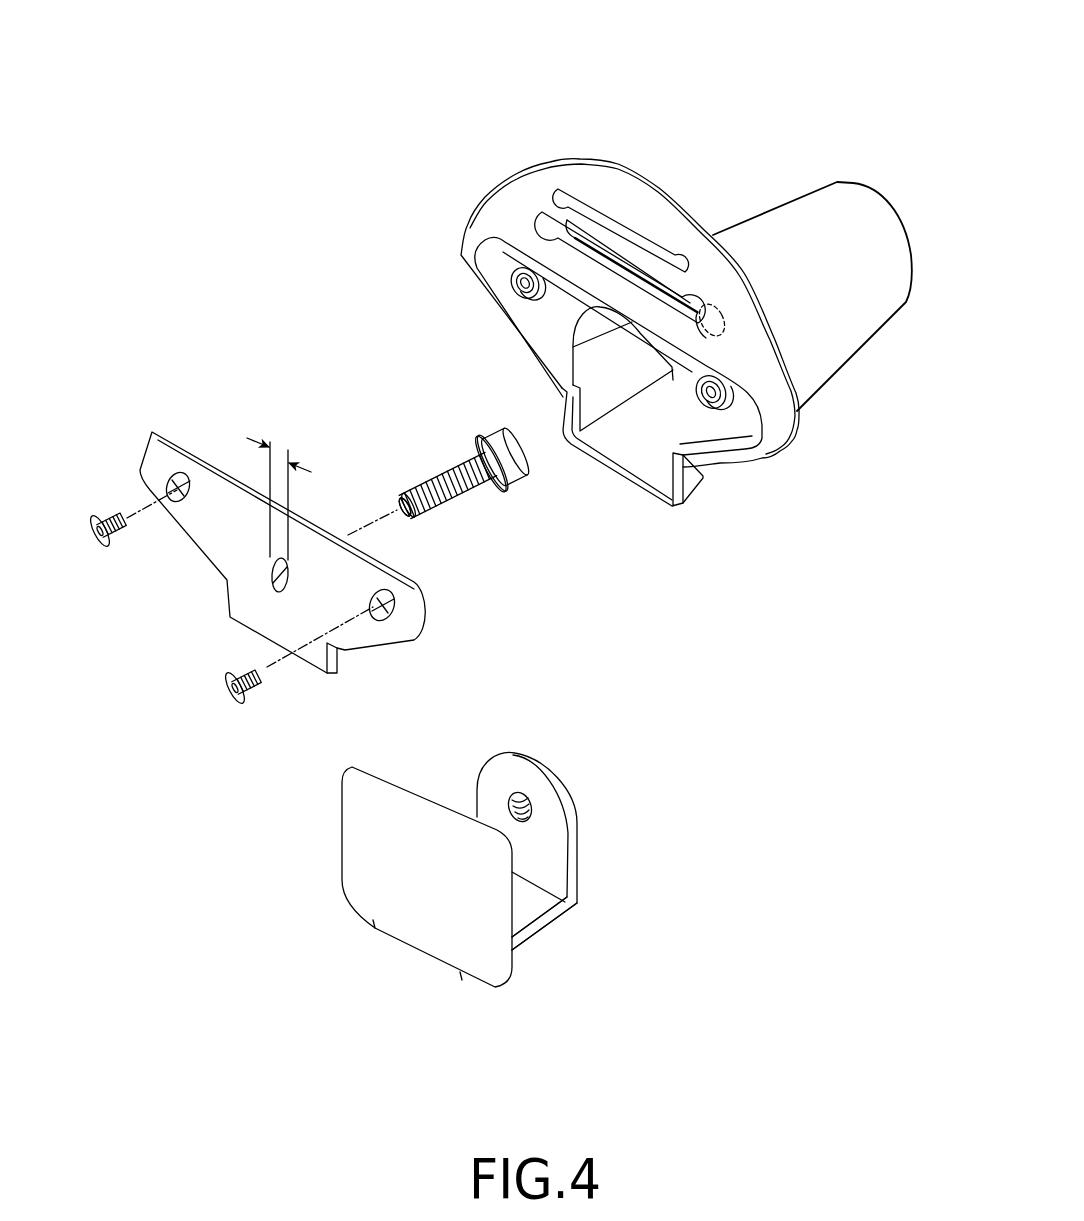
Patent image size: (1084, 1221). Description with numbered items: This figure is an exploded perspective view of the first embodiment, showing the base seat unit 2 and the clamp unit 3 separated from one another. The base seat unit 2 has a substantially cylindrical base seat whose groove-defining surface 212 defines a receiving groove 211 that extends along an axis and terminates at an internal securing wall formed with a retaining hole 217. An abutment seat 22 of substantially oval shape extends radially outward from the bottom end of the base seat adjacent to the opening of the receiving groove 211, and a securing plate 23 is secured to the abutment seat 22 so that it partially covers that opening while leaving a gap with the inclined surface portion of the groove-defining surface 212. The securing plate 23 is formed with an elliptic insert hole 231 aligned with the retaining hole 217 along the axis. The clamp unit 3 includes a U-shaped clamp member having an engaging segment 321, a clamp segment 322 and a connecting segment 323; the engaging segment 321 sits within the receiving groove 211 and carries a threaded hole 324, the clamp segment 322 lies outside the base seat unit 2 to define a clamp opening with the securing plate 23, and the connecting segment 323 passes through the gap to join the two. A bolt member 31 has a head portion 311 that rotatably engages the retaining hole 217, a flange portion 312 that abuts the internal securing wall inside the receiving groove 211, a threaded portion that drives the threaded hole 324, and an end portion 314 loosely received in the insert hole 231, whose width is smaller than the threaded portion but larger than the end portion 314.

The base seat unit 2 is at (808, 188).
The abutment seat 22 is at (520, 200).
The receiving groove 211 is at (585, 358).
The groove-defining surface 212 is at (637, 443).
The retaining hole 217 is at (718, 305).
The securing plate 23 is at (200, 537).
The insert hole 231 is at (280, 573).
The bolt member 31 is at (435, 472).
The head portion 311 is at (512, 432).
The flange portion 312 is at (502, 485).
The end portion 314 is at (400, 508).
The clamp unit 3 is at (463, 882).
The engaging segment 321 is at (537, 758).
The clamp segment 322 is at (363, 851).
The connecting segment 323 is at (537, 928).
The threaded hole 324 is at (533, 808).